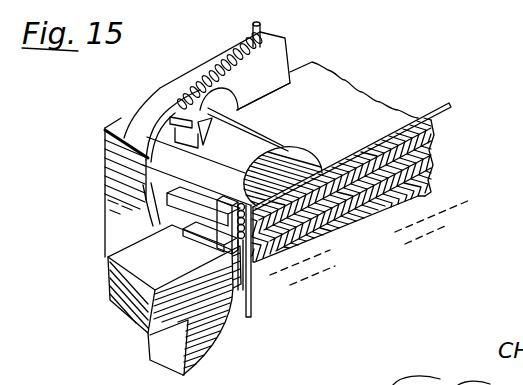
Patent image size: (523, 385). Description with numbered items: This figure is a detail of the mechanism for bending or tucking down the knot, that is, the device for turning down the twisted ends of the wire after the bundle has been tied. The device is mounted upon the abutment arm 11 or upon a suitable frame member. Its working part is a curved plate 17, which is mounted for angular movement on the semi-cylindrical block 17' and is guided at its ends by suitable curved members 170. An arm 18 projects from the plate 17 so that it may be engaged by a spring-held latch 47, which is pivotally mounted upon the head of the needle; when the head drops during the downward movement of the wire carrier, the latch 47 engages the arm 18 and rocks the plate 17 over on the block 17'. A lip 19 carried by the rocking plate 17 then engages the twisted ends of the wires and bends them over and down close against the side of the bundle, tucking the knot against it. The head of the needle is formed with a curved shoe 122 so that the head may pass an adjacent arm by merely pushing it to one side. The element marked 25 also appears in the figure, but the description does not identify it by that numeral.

The curved members 170 is at (150, 117).
The spring-held latch 47 is at (145, 223).
The abutment arm 11 is at (276, 62).
The curved plate 17 is at (215, 156).
The semi-cylindrical block 17' is at (297, 161).
The wire 25 is at (251, 293).
The arm 18 is at (183, 195).
The lip 19 is at (223, 220).
The curved shoe 122 is at (205, 348).